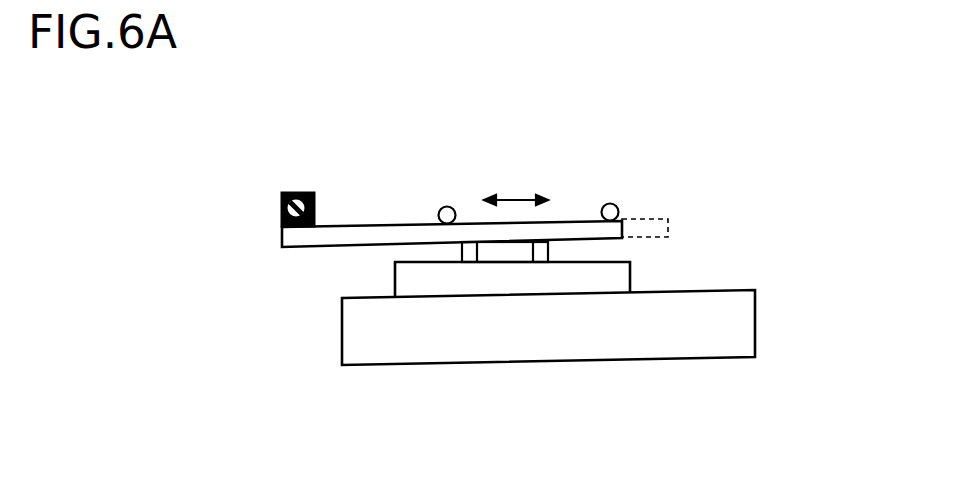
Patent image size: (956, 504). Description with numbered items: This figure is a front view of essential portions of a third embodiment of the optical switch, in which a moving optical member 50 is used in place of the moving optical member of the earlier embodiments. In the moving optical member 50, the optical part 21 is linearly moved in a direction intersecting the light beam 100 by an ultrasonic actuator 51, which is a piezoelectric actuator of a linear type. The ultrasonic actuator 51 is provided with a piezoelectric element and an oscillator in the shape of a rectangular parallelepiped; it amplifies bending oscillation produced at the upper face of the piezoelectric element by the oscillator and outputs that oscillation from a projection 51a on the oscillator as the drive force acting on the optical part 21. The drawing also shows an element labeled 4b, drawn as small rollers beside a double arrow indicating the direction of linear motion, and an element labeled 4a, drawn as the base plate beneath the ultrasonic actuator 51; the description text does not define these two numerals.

The moving optical member 50 is at (313, 147).
The optical part 21 is at (281, 197).
The light beam 100 is at (281, 218).
The rollers 4b is at (451, 207).
The projection 51a is at (461, 251).
The ultrasonic actuator 51 is at (652, 272).
The base 4a is at (745, 322).